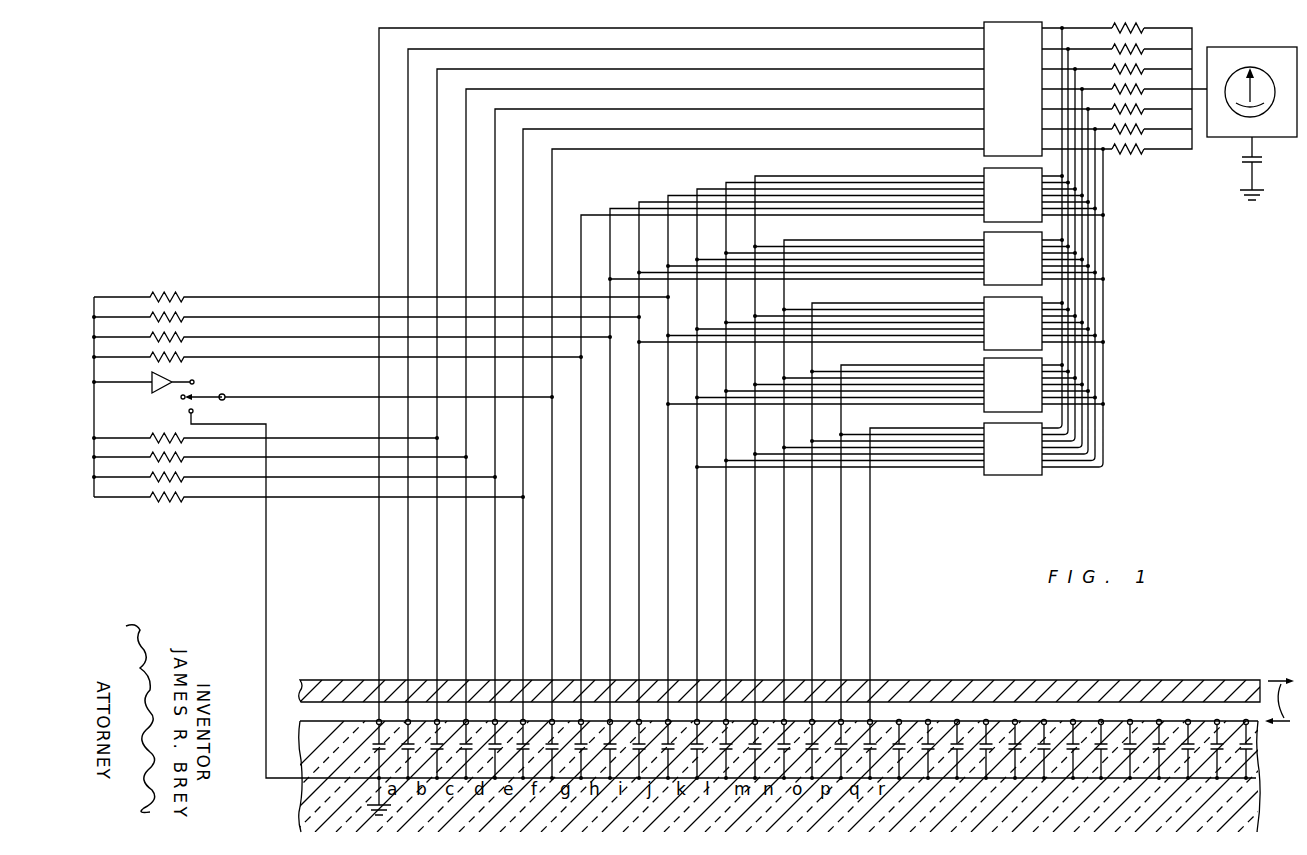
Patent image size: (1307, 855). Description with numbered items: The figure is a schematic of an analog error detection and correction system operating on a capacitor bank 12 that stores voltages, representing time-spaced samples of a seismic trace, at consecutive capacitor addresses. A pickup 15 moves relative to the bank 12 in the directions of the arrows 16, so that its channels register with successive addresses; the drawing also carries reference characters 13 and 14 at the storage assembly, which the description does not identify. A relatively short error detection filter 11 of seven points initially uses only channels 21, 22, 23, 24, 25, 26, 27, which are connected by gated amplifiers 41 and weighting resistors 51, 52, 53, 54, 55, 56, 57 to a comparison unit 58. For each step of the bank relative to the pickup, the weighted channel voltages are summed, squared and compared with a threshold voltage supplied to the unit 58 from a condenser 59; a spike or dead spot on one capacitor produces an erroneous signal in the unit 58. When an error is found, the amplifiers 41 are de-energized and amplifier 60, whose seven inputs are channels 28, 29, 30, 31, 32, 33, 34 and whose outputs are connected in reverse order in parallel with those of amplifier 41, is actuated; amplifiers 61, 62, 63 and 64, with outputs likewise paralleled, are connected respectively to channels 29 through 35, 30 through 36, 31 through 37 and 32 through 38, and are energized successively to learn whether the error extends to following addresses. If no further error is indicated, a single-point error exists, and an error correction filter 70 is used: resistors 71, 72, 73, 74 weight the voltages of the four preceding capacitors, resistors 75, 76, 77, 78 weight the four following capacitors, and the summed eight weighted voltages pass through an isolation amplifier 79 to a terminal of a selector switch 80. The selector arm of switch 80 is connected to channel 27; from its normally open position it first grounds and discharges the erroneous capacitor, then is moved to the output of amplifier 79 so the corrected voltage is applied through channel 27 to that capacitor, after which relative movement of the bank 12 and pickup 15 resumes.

The error detection filter 11 is at (916, 511).
The capacitor bank 12 is at (1048, 808).
The ground lead 13 is at (266, 609).
The surface layer 14 is at (300, 720).
The pickup 15 is at (1152, 680).
The arrows 16 is at (1279, 697).
The channel 21 is at (380, 604).
The channel 22 is at (409, 604).
The channel 23 is at (438, 604).
The channel 24 is at (467, 604).
The channel 25 is at (496, 604).
The channel 26 is at (524, 604).
The channel 27 is at (553, 604).
The channel 28 is at (582, 604).
The channel 29 is at (611, 604).
The channel 30 is at (640, 604).
The channel 31 is at (669, 604).
The channel 32 is at (698, 604).
The channel 33 is at (727, 604).
The channel 34 is at (756, 604).
The channel 35 is at (785, 604).
The channel 36 is at (813, 604).
The channel 37 is at (842, 604).
The channel 38 is at (871, 604).
The gated amplifiers 41 is at (1023, 99).
The weighting resistor 51 is at (1140, 31).
The weighting resistor 52 is at (1140, 52).
The weighting resistor 53 is at (1140, 72).
The weighting resistor 54 is at (1140, 92).
The weighting resistor 55 is at (1140, 112).
The weighting resistor 56 is at (1140, 132).
The weighting resistor 57 is at (1140, 152).
The comparison unit 58 is at (1267, 47).
The condenser 59 is at (1257, 162).
The amplifier 60 is at (1023, 205).
The amplifier 61 is at (1023, 269).
The amplifier 62 is at (1023, 334).
The amplifier 63 is at (1023, 395).
The amplifier 64 is at (1023, 459).
The error correction filter 70 is at (122, 282).
The resistor 71 is at (157, 494).
The resistor 72 is at (157, 474).
The resistor 73 is at (157, 454).
The resistor 74 is at (157, 435).
The resistor 75 is at (185, 360).
The resistor 76 is at (185, 340).
The resistor 77 is at (183, 320).
The resistor 78 is at (181, 300).
The isolation amplifier 79 is at (151, 376).
The selector switch 80 is at (208, 396).